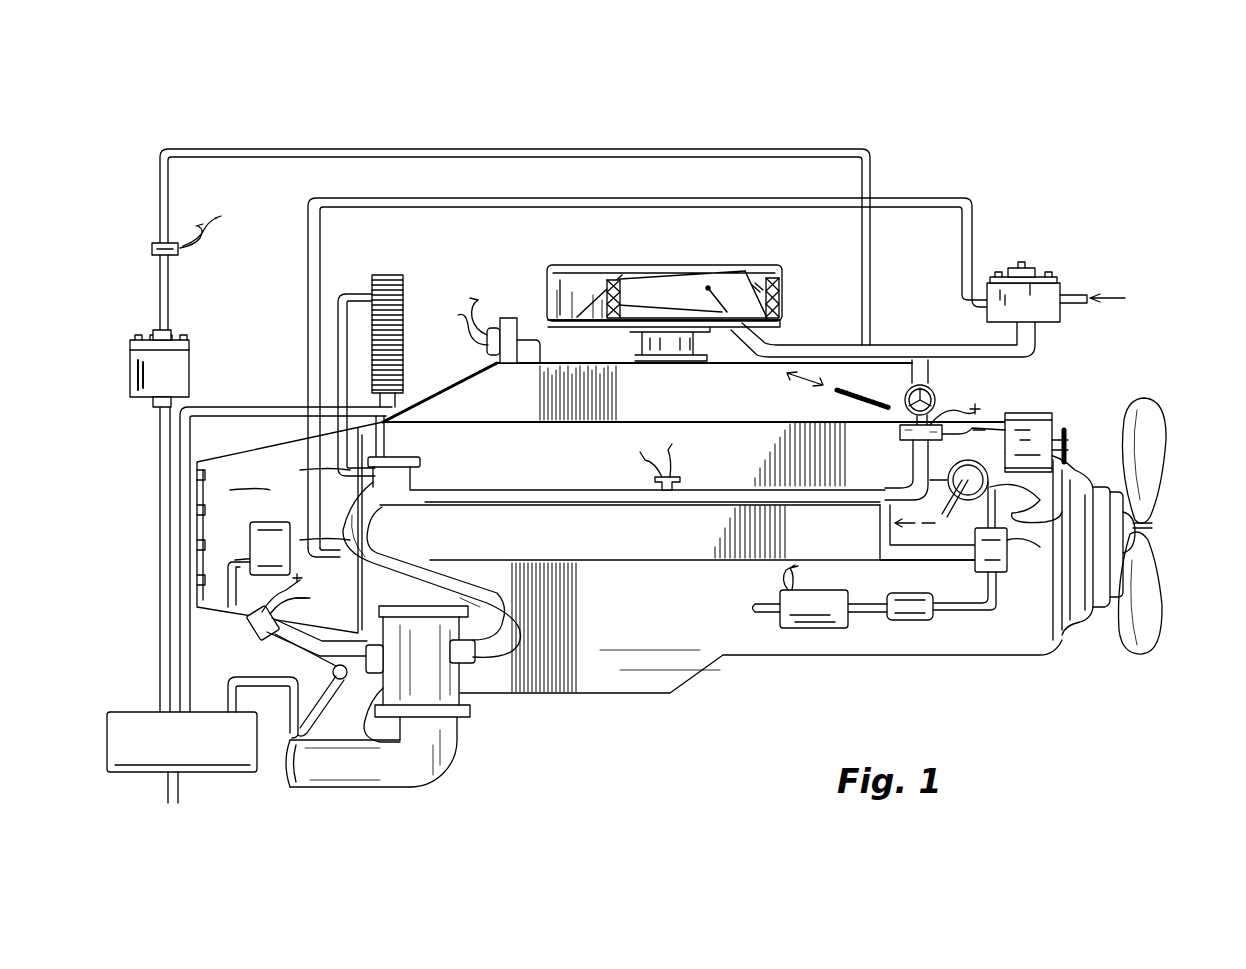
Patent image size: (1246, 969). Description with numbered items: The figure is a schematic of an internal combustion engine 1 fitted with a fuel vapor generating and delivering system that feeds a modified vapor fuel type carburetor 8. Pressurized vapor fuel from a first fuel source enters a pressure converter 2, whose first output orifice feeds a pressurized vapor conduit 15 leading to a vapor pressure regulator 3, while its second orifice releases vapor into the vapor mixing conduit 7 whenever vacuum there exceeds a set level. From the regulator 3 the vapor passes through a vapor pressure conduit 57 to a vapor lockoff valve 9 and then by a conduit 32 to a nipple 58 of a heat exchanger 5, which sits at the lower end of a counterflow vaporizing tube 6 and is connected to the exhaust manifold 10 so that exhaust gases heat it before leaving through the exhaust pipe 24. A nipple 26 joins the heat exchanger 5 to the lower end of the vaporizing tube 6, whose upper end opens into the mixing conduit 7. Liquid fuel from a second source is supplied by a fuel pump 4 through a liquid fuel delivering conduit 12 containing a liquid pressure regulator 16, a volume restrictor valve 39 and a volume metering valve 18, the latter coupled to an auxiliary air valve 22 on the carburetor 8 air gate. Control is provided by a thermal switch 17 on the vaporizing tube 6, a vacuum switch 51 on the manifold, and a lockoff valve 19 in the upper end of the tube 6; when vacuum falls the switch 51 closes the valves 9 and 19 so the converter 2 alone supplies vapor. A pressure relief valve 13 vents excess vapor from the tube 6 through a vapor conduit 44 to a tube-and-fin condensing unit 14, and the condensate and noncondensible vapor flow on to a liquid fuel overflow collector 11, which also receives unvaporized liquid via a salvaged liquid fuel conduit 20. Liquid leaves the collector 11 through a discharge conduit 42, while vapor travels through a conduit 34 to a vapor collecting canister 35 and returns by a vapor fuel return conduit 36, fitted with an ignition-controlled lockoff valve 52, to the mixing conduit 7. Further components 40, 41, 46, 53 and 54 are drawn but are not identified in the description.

The internal combustion engine 1 is at (1098, 483).
The pressure converter 2 is at (1040, 277).
The vapor pressure regulator 3 is at (232, 520).
The fuel pump 4 is at (805, 628).
The heat exchanger 5 is at (472, 705).
The counterflow vaporizing tube 6 is at (755, 495).
The vapor mixing conduit 7 is at (884, 350).
The carburetor 8 is at (652, 282).
The vapor lockoff valve 9 is at (252, 625).
The exhaust manifold 10 is at (665, 545).
The liquid fuel overflow collector 11 is at (160, 760).
The liquid fuel delivering conduit 12 is at (1040, 555).
The pressure relief valve 13 is at (425, 471).
The condensing unit 14 is at (405, 292).
The pressurized vapor conduit 15 is at (995, 215).
The liquid pressure regulator 16 is at (935, 620).
The thermal switch 17 is at (670, 475).
The volume metering valve 18 is at (1043, 502).
The lockoff valve 19 is at (890, 412).
The salvaged liquid fuel conduit 20 is at (285, 735).
The auxiliary air valve 22 is at (788, 305).
The exhaust pipe 24 is at (360, 788).
The nipple 26 is at (515, 660).
The conduit 32 is at (250, 648).
The conduit 34 is at (160, 540).
The vapor collecting canister 35 is at (185, 340).
The vapor fuel return conduit 36 is at (766, 148).
The volume restrictor valve 39 is at (995, 590).
The battery 40 is at (1022, 425).
The conduit 41 is at (280, 408).
The discharge conduit 42 is at (180, 790).
The vapor conduit 44 is at (338, 336).
The air cleaner element 46 is at (735, 270).
The vacuum switch 51 is at (500, 318).
The lockoff valve 52 is at (180, 248).
The conduit 53 is at (945, 392).
The conduit 54 is at (945, 402).
The vapor pressure conduit 57 is at (230, 578).
The nipple 58 is at (398, 755).